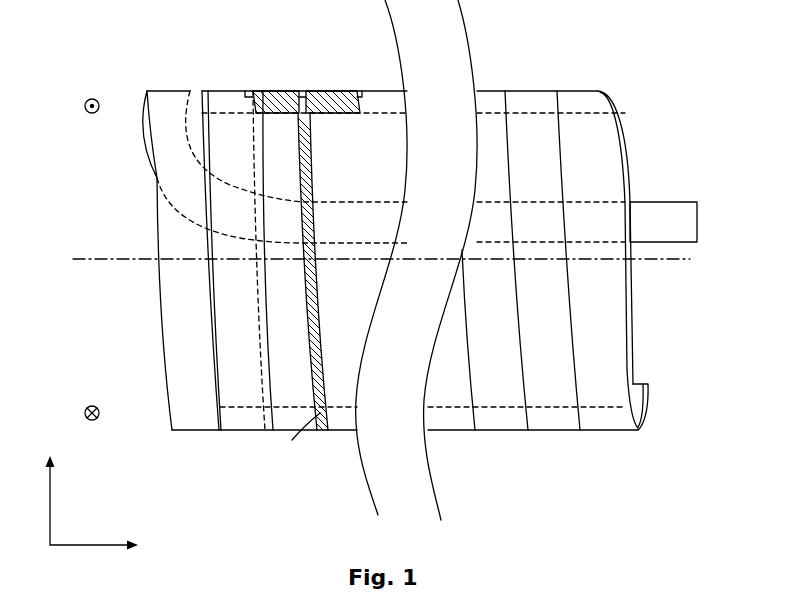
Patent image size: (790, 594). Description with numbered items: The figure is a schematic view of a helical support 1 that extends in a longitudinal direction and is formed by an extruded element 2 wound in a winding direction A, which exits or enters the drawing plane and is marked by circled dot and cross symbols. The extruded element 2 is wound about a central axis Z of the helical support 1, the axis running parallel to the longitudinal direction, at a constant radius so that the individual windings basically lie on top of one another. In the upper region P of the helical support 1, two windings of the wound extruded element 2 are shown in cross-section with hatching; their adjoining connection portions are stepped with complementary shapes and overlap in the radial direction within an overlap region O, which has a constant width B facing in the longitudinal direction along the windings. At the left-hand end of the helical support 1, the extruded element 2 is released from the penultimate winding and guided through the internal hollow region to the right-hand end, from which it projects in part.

The helical support 1 is at (392, 279).
The extruded element 2 is at (698, 222).
The upper region P is at (288, 82).
The constant width B is at (297, 435).
The overlap region O is at (292, 440).
The central axis Z is at (105, 259).
The winding direction A is at (95, 270).